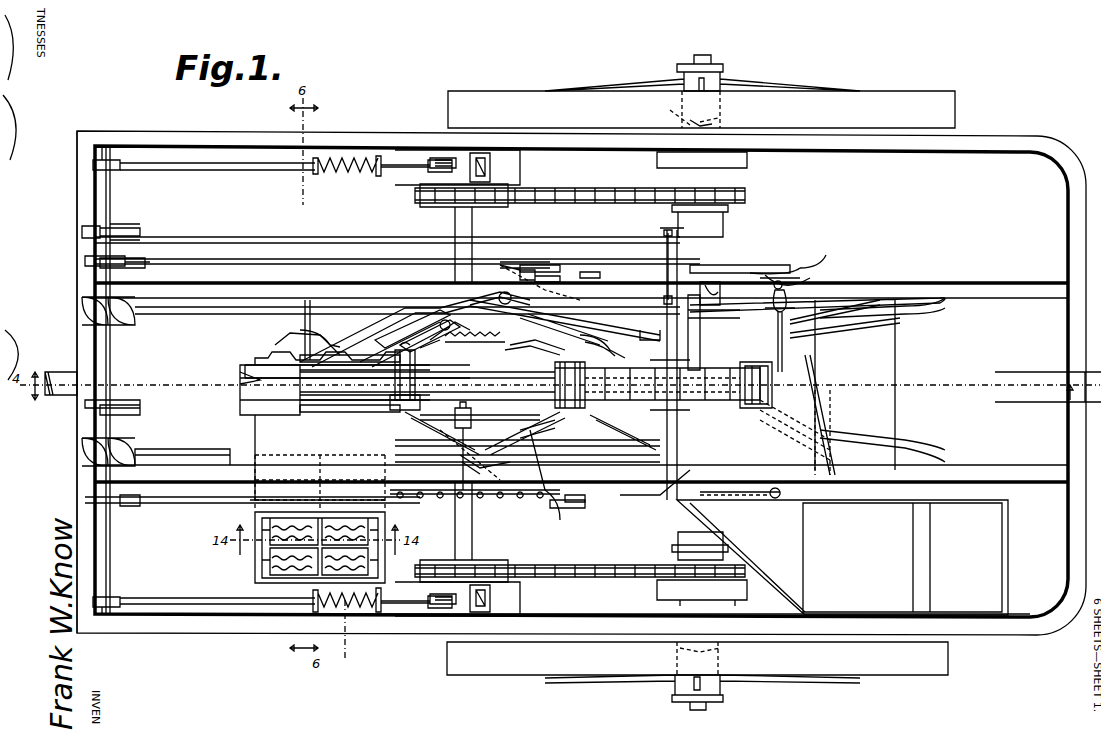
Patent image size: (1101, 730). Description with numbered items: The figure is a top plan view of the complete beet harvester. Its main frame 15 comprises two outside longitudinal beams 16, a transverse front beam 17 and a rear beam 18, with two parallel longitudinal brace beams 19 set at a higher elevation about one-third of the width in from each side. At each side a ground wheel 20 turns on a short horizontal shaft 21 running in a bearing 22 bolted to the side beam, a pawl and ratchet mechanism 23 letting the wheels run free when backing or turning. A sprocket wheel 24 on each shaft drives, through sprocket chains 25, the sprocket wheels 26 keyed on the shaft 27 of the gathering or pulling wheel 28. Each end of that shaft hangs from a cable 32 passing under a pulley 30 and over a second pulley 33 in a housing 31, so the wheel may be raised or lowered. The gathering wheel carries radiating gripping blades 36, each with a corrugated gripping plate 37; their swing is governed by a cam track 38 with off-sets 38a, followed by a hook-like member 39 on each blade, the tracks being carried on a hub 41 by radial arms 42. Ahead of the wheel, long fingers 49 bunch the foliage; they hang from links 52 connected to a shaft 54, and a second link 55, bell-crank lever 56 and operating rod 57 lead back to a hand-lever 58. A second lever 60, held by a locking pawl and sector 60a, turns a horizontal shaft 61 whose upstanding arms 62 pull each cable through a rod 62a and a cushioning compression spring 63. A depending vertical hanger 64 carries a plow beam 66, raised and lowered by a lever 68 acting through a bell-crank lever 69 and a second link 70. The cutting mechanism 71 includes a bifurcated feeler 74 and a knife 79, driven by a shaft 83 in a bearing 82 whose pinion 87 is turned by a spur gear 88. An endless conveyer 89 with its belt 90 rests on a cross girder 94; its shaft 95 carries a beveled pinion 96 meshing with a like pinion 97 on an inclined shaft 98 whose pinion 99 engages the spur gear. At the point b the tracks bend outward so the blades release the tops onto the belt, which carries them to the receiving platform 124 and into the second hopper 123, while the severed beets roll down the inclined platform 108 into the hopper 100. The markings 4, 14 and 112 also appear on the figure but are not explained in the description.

The section line / shaft 4 is at (573, 404).
The brush unit section 14 is at (316, 519).
The main frame 15 is at (581, 377).
The outside longitudinal beams 16 is at (220, 138).
The front beam 17 is at (1072, 254).
The rear beam 18 is at (120, 568).
The longitudinal brace beams 19 is at (200, 283).
The ground wheel 20 is at (701, 383).
The short horizontal shaft 21 is at (735, 122).
The bearing 22 is at (640, 608).
The pawl and ratchet mechanism 23 is at (680, 118).
The sprocket wheel 24 is at (730, 218).
The sprocket chains 25 is at (605, 195).
The sprocket wheels 26 is at (425, 205).
The shaft of the gathering wheel 27 is at (474, 226).
The gathering or pulling wheel 28 is at (258, 360).
The pulley 30 is at (480, 155).
The housing 31 is at (438, 155).
The cable 32 is at (384, 158).
The second pulley 33 is at (428, 170).
The gripping blades 36 is at (352, 345).
The gripping plate 37 is at (242, 378).
The cam track 38 is at (328, 350).
The off-sets 38a is at (605, 335).
The hook-like member 39 is at (290, 345).
The hub 41 is at (452, 458).
The radial arms 42 is at (560, 532).
The long fingers 49 is at (845, 330).
The links 52 is at (820, 340).
The shaft 54 is at (808, 288).
The second link 55 is at (775, 272).
The bell-crank lever 56 is at (718, 268).
The operating rod 57 is at (180, 240).
The hand-lever 58 is at (80, 231).
The second lever 60 is at (125, 412).
The locking pawl and sector 60a is at (120, 405).
The horizontal shaft 61 is at (111, 211).
The upstanding arms 62 is at (115, 160).
The rod 62a is at (215, 168).
The compression spring 63 is at (338, 172).
The depending vertical hanger 64 is at (821, 255).
The plow beam 66 is at (664, 236).
The lever 68 is at (88, 262).
The bell-crank lever 69 is at (560, 262).
The second link 70 is at (526, 265).
The cutting mechanism 71 is at (325, 400).
The bifurcated finger or feeler 74 is at (358, 400).
The knife 79 is at (395, 395).
The bearing 82 is at (400, 340).
The shaft 83 is at (425, 330).
The pinion 87 is at (445, 318).
The spur gear 88 is at (500, 292).
The endless conveyer 89 is at (700, 400).
The belt 90 is at (692, 345).
The cross girder 94 is at (678, 268).
The shaft 95 is at (775, 340).
The beveled pinion 96 is at (768, 305).
The pinion 97 is at (800, 322).
The longitudinal downwardly inclined shaft 98 is at (586, 272).
The pinion 99 is at (510, 365).
The hopper 100 is at (190, 560).
The inclined platform 108 is at (255, 410).
The spring 112 is at (475, 343).
The second hopper 123 is at (842, 557).
The receiving platform 124 is at (808, 410).
The outward bend of the cam tracks b is at (646, 385).